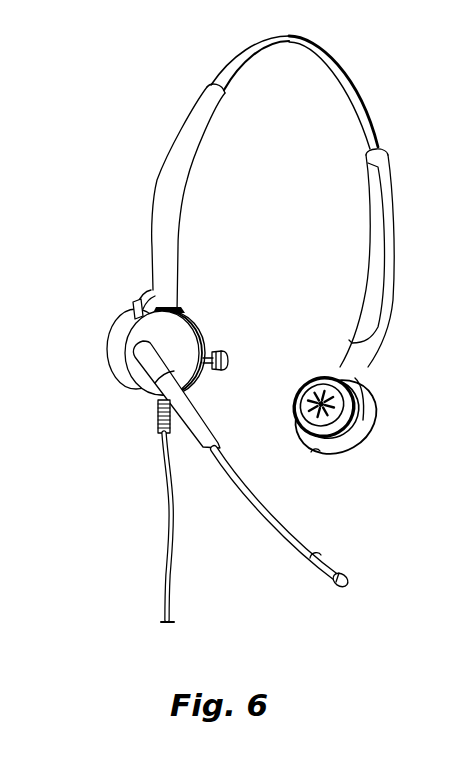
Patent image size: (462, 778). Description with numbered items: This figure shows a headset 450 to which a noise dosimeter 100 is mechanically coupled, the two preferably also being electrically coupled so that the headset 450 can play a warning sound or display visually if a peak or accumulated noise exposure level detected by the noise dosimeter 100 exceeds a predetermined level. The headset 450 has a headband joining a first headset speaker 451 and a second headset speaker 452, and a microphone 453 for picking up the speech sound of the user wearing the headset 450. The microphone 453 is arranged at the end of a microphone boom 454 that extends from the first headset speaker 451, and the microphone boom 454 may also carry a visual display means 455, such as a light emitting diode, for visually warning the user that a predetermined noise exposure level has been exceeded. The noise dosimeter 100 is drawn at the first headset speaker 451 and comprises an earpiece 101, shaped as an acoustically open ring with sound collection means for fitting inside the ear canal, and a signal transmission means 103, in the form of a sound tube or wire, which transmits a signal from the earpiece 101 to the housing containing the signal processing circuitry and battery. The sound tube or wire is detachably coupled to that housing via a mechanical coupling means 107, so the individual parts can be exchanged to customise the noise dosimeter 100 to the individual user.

The noise dosimeter 100 is at (244, 329).
The earpiece 101 is at (229, 369).
The signal transmission means 103 is at (150, 290).
The mechanical coupling means 107 is at (128, 314).
The headset 450 is at (152, 96).
The first headset speaker 451 is at (167, 301).
The second headset speaker 452 is at (358, 422).
The microphone 453 is at (349, 586).
The microphone boom 454 is at (273, 481).
The visual display means 455 is at (321, 552).